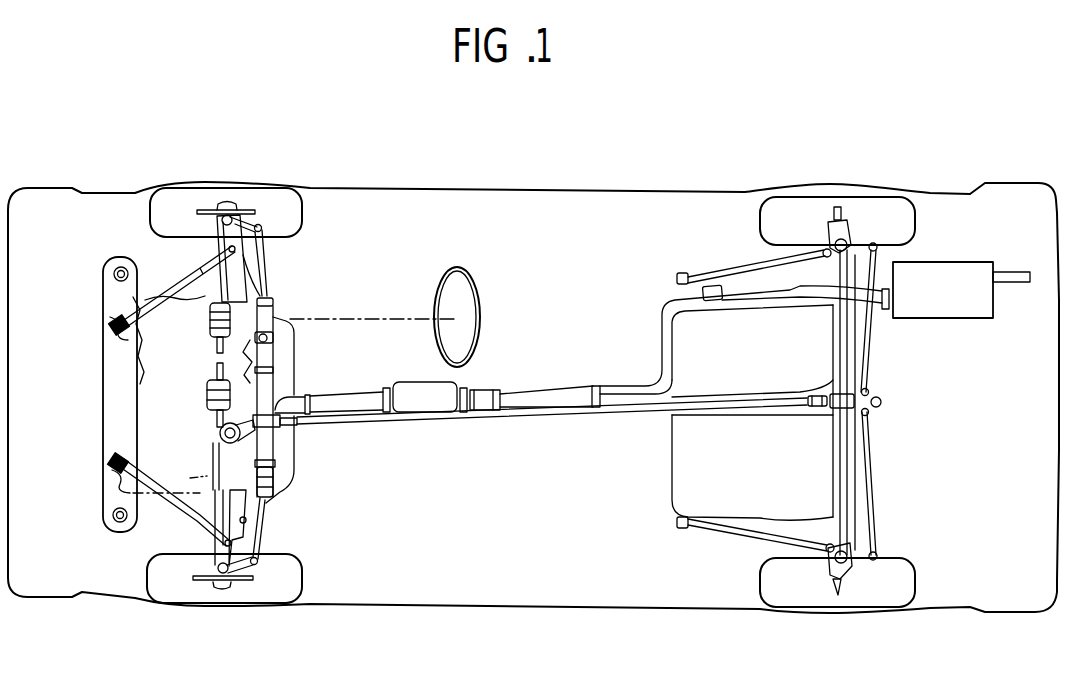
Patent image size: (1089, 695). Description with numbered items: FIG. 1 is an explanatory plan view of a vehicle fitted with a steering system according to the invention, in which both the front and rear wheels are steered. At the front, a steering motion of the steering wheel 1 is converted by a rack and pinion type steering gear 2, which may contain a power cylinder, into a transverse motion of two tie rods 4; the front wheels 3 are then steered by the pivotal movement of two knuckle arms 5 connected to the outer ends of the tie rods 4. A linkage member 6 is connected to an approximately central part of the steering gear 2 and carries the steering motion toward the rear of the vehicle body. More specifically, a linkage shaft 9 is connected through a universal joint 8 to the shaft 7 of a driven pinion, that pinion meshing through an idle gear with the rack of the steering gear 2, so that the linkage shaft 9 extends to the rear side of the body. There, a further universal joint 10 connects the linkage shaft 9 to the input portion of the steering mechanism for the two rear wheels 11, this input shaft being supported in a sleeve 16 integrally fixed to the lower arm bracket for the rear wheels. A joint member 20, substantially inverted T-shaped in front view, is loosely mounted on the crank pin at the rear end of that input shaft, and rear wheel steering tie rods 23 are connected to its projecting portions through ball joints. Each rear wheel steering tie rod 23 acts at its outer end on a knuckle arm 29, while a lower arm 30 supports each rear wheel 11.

The steering wheel 1 is at (458, 265).
The steering gear 2 is at (275, 358).
The front wheels 3 is at (288, 194).
The tie rods 4 is at (267, 264).
The knuckle arms 5 is at (246, 210).
The linkage member 6 is at (473, 423).
The shaft of driven pinion 7 is at (293, 458).
The universal joint 8 is at (297, 418).
The linkage shaft 9 is at (507, 420).
The universal joint 10 is at (813, 405).
The rear wheels 11 is at (902, 202).
The sleeve 16 is at (830, 382).
The joint member 20 is at (884, 401).
The rear wheel steering tie rods 23 is at (880, 263).
The knuckle arm 29 is at (863, 245).
The lower arm 30 is at (833, 307).